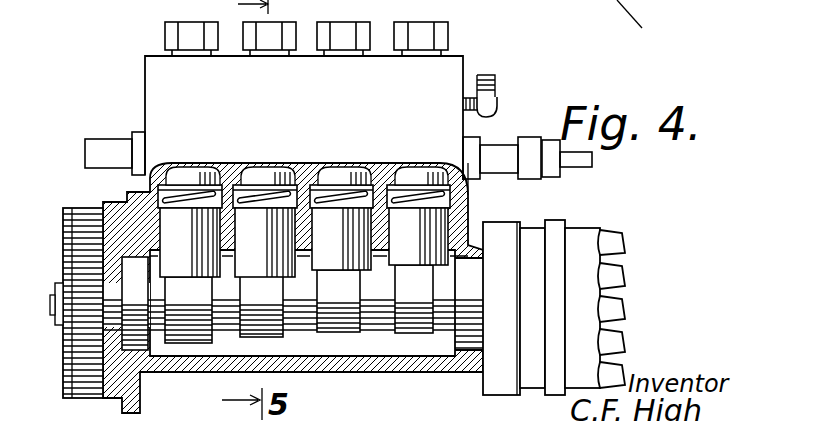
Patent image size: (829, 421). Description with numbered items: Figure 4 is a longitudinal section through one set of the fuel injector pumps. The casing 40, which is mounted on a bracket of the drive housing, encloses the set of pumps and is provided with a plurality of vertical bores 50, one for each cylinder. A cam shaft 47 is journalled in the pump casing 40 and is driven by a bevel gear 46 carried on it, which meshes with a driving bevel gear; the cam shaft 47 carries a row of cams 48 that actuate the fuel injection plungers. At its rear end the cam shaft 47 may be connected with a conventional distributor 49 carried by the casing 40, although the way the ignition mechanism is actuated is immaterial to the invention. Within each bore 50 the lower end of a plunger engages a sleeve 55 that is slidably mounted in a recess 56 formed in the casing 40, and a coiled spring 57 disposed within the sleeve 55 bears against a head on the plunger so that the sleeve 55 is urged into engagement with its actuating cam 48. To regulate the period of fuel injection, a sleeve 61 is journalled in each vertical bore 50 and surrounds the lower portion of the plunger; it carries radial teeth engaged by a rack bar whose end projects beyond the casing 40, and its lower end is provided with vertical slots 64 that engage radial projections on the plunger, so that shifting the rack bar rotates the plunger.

The casing 40 is at (145, 76).
The bevel gear 46 is at (80, 210).
The cam shaft 47 is at (306, 341).
The cam 48 is at (422, 330).
The distributor 49 is at (600, 229).
The vertical bore 50 is at (380, 174).
The sleeve 55 is at (328, 259).
The recess 56 is at (460, 220).
The coiled spring 57 is at (318, 203).
The sleeve 61 is at (264, 177).
The vertical slot 64 is at (577, 173).